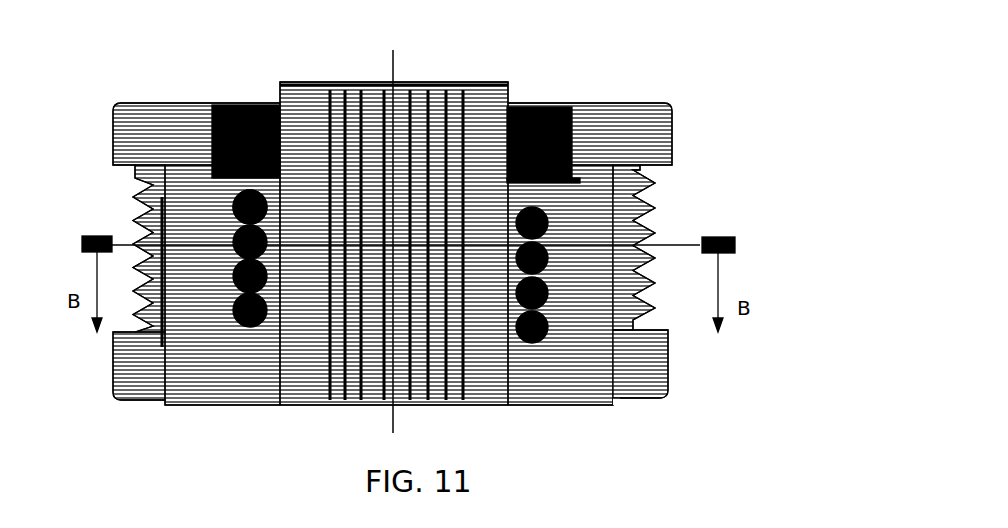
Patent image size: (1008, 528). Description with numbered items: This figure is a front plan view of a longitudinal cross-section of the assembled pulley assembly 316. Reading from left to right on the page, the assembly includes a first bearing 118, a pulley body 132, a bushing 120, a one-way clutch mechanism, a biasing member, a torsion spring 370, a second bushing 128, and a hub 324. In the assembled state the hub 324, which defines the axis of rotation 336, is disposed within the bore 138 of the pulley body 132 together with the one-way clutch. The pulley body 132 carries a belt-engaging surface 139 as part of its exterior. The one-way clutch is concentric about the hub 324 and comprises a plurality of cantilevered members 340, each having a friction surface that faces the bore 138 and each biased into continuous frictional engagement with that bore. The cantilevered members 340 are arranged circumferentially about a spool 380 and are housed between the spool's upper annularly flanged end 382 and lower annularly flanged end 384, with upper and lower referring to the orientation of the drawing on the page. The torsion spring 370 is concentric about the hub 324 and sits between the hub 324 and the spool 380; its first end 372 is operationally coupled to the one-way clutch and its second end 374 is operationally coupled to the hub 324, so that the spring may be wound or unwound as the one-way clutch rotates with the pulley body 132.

The pulley assembly 316 is at (803, 92).
The bushing 120 is at (188, 178).
The bore 138 is at (165, 197).
The second bushing 128 is at (168, 388).
The cantilevered members 340 is at (182, 325).
The axis of rotation 336 is at (403, 420).
The hub 324 is at (503, 373).
The pulley body 132 is at (633, 140).
The belt-engaging surface 139 is at (647, 282).
The lower annularly flanged end 384 is at (595, 353).
The spool 380 is at (232, 105).
The first bearing 118 is at (550, 103).
The upper annularly flanged end 382 is at (560, 200).
The torsion spring 370 is at (258, 328).
The first end 372 is at (258, 193).
The second end 374 is at (520, 322).